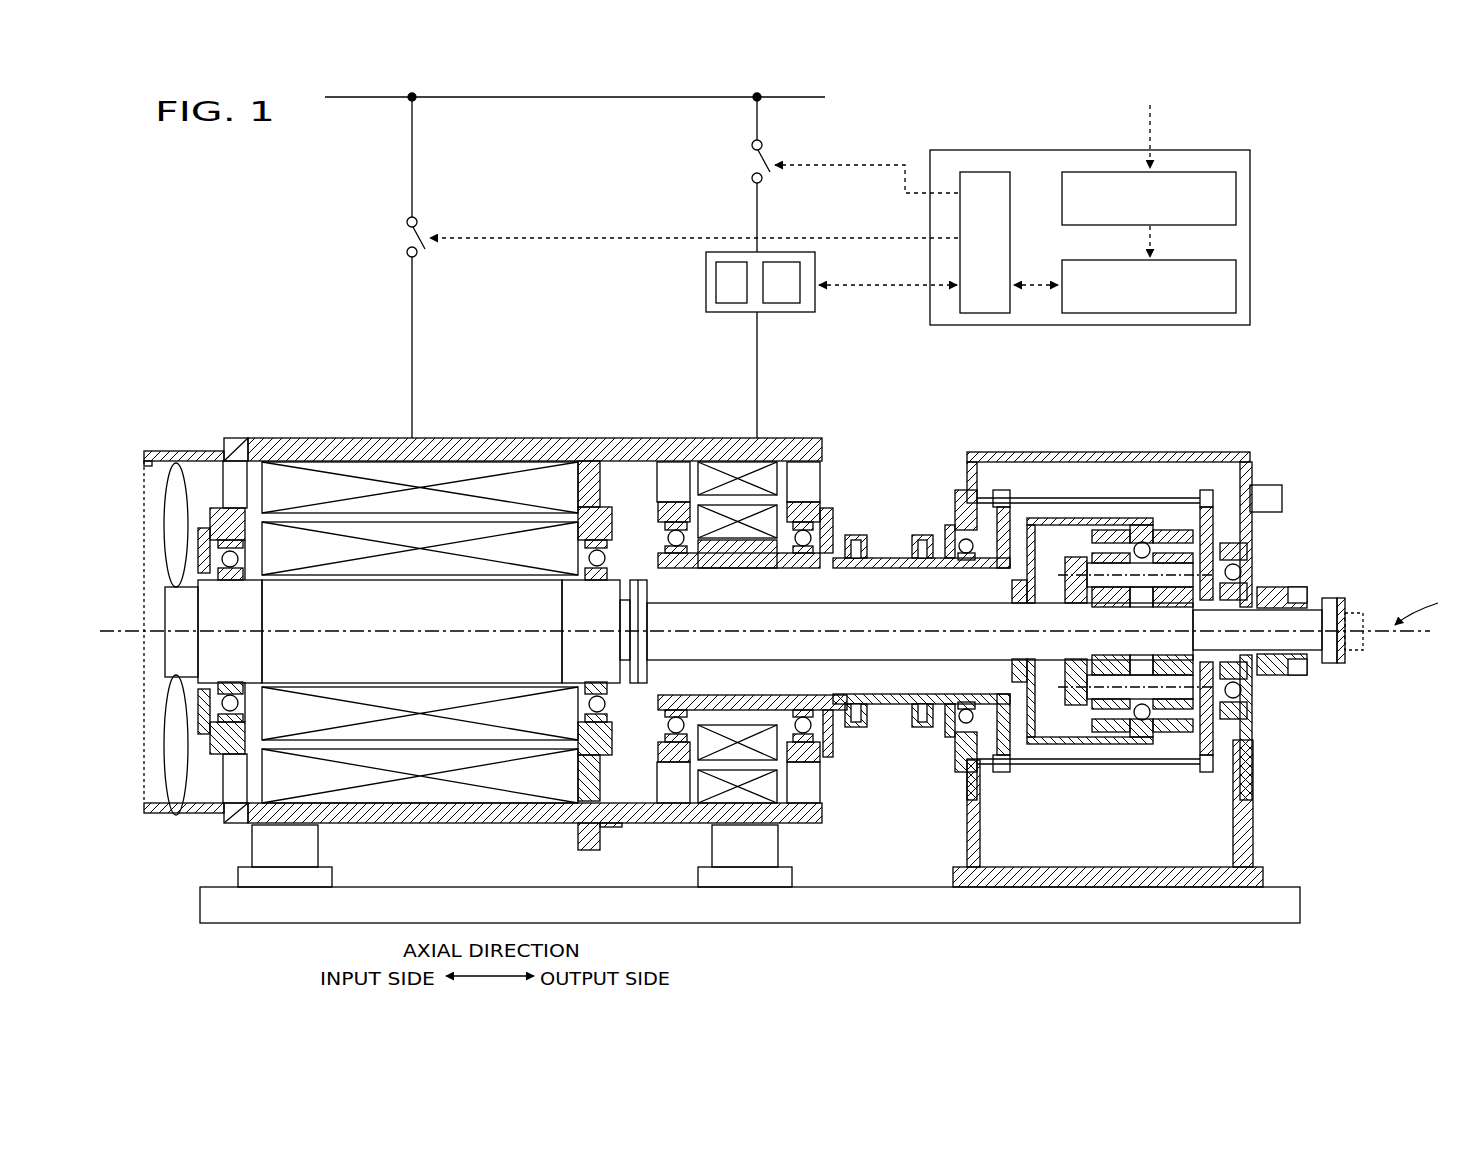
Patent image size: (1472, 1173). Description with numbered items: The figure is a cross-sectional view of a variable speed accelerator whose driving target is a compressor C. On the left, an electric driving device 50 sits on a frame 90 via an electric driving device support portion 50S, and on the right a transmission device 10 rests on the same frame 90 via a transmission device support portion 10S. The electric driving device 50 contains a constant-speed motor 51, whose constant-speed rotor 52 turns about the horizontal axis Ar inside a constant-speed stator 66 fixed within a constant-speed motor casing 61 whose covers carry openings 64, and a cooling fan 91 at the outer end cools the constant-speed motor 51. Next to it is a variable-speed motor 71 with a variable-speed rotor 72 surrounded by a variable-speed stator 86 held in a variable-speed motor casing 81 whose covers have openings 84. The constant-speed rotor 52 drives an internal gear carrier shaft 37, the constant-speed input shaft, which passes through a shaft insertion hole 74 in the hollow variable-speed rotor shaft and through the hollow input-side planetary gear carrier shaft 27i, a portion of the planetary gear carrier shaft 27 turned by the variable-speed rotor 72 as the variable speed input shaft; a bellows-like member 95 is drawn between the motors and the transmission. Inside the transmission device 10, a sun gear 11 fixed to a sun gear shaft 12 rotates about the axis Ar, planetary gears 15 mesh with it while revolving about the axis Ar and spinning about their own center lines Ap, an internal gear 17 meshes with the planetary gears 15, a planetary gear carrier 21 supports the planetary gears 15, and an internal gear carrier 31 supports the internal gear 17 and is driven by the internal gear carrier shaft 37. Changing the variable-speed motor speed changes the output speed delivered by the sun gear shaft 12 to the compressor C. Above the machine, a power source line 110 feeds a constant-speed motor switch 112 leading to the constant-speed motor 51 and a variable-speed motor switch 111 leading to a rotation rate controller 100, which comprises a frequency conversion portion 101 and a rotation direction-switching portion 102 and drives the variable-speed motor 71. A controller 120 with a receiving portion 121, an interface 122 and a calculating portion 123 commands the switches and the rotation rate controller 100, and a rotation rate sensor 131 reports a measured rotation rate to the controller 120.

The transmission device 10 is at (1250, 440).
The transmission device support portion 10S is at (1245, 843).
The sun gear 11 is at (1188, 640).
The sun gear shaft 12 is at (1330, 655).
The planetary gears 15 is at (1185, 575).
The internal gear 17 is at (1170, 520).
The planetary gear carrier 21 is at (1222, 528).
The planetary gear carrier shaft 27 is at (983, 558).
The input-side planetary gear carrier shaft 27i is at (966, 631).
The internal gear carrier 31 is at (1092, 748).
The internal gear carrier shaft 37 is at (997, 655).
The electric driving device 50 is at (332, 290).
The electric driving device support portion 50S is at (305, 855).
The constant-speed motor 51 is at (276, 430).
The constant-speed rotor 52 is at (508, 522).
The constant-speed motor casing 61 is at (456, 450).
The openings 64 is at (222, 485).
The constant-speed stator 66 is at (338, 490).
The variable-speed motor 71 is at (797, 438).
The variable-speed rotor 72 is at (745, 712).
The shaft insertion hole 74 is at (655, 582).
The variable-speed motor casing 81 is at (645, 815).
The openings 84 is at (668, 470).
The variable-speed stator 86 is at (715, 795).
The frame 90 is at (1290, 903).
The cooling fan 91 is at (180, 765).
The bellows 95 is at (885, 560).
The rotation rate controller 100 is at (817, 305).
The frequency conversion portion 101 is at (733, 262).
The rotation direction-switching portion 102 is at (787, 262).
The power source line 110 is at (600, 99).
The variable-speed motor switch 111 is at (772, 163).
The constant-speed motor switch 112 is at (427, 238).
The controller 120 is at (1187, 148).
The receiving portion 121 is at (1238, 192).
The interface 122 is at (1000, 172).
The calculating portion 123 is at (1238, 282).
The rotation rate sensor 131 is at (1283, 497).
The center lines of planetary gears Ap is at (1212, 535).
The axis Ar is at (1432, 609).
The compressor C is at (1342, 598).